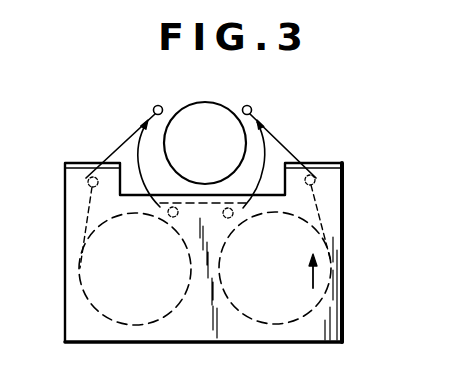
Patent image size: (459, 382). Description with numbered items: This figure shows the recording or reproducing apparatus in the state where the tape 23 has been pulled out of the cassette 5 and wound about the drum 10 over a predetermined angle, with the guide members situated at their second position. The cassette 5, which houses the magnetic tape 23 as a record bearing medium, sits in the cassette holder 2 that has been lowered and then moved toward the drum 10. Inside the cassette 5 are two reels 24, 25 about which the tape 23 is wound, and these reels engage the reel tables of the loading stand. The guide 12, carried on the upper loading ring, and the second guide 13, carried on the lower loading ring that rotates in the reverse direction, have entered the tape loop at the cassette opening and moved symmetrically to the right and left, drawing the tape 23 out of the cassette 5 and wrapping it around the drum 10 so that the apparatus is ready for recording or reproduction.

The cassette holder 2 is at (335, 161).
The cassette 5 is at (343, 328).
The drum 10 is at (222, 103).
The guide 12 is at (155, 105).
The second guide 13 is at (250, 105).
The tape 23 is at (292, 147).
The reel 24 is at (84, 282).
The reel 25 is at (329, 267).